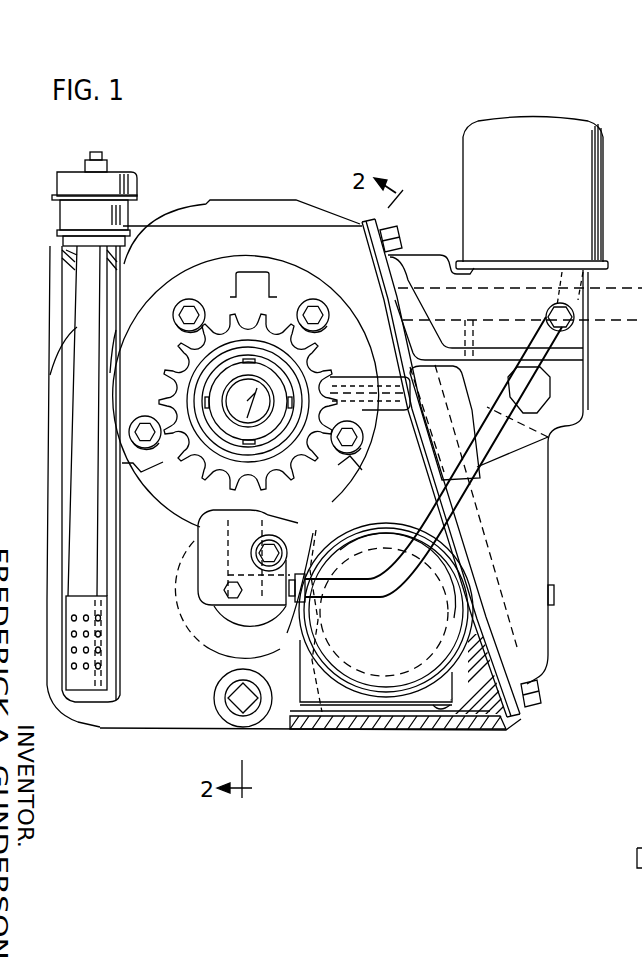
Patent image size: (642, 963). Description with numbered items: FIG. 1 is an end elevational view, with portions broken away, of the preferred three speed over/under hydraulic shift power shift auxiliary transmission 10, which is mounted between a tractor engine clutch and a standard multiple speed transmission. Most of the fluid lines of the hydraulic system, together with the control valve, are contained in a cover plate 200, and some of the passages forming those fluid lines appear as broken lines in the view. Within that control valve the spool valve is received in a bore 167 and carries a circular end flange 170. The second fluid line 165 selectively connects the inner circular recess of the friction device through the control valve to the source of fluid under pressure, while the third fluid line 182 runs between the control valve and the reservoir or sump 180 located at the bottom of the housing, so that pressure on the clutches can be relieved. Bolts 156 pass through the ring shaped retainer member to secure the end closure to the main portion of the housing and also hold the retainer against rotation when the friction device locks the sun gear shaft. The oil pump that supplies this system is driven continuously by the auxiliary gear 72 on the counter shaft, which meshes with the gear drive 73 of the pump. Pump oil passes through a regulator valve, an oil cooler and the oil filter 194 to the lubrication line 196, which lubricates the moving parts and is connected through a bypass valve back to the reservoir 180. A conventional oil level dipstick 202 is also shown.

The auxiliary transmission 10 is at (239, 224).
The bolts 156 is at (306, 300).
The second fluid line 165 is at (369, 378).
The bore 167 is at (547, 440).
The circular end flange 170 is at (515, 316).
The reservoir or sump 180 is at (387, 710).
The third fluid line 182 is at (641, 718).
The oil filter 194 is at (514, 128).
The lubrication line 196 is at (472, 465).
The cover plate 200 is at (548, 540).
The oil level dipstick 202 is at (87, 423).
The auxiliary gear 72 is at (308, 713).
The gear drive 73 is at (329, 713).